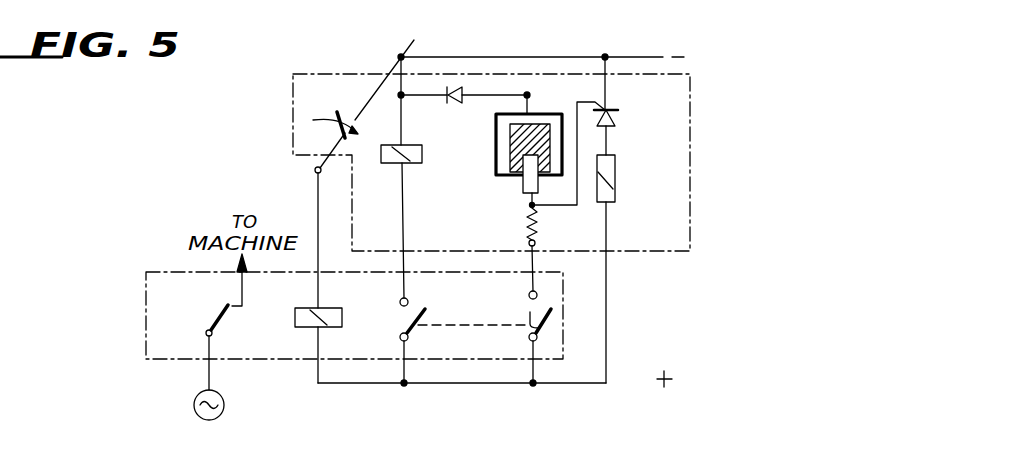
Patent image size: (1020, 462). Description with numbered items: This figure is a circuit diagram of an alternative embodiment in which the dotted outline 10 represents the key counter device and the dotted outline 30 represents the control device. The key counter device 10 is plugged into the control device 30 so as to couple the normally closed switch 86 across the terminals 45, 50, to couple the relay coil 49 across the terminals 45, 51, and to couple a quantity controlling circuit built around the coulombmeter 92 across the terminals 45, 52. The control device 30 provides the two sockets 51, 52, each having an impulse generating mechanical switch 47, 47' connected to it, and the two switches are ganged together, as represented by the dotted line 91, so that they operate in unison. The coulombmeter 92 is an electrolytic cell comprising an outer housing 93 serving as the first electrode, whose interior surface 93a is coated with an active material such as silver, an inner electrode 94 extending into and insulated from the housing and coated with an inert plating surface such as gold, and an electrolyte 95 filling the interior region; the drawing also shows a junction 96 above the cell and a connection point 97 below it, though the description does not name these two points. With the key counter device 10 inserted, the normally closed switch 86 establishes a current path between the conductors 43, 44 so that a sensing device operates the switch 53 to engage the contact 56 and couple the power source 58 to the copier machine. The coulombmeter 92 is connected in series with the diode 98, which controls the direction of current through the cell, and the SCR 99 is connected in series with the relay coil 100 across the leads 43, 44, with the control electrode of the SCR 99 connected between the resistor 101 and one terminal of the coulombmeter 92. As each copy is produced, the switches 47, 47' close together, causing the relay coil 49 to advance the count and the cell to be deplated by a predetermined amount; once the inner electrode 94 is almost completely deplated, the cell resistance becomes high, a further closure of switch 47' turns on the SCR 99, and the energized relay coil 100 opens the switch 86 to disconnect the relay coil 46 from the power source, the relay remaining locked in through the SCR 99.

The key counter device 10 is at (357, 50).
The control device 30 is at (143, 315).
The conductor 43 is at (630, 56).
The conductor 44 is at (490, 384).
The terminal 45 is at (397, 68).
The relay coil 46 is at (302, 327).
The mechanical switch 47 is at (391, 346).
The mechanical switch 47' is at (519, 339).
The relay coil 49 is at (387, 165).
The terminal 50 is at (314, 171).
The socket 51 is at (400, 301).
The socket 52 is at (530, 281).
The switch 53 is at (205, 322).
The contact 56 is at (238, 309).
The power source 58 is at (194, 405).
The normally closed switch 86 is at (333, 113).
The dotted line 91 is at (453, 327).
The coulombmeter 92 is at (507, 182).
The outer housing 93 is at (506, 167).
The interior surface 93a is at (512, 148).
The inner electrode 94 is at (522, 192).
The electrolyte 95 is at (520, 137).
The junction 96 is at (530, 94).
The terminal 97 is at (538, 242).
The diode 98 is at (455, 90).
The SCR 99 is at (618, 126).
The relay coil 100 is at (617, 173).
The resistor 101 is at (538, 220).